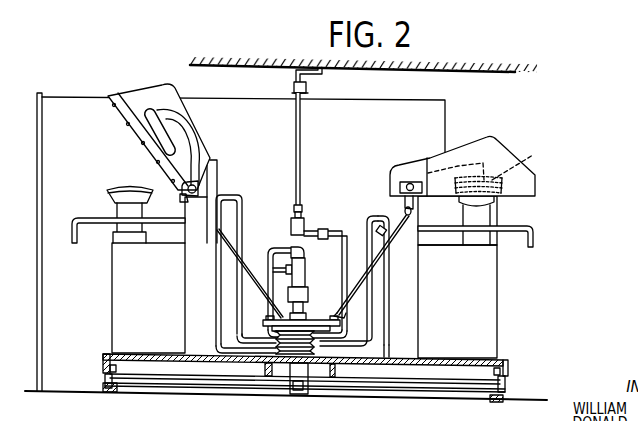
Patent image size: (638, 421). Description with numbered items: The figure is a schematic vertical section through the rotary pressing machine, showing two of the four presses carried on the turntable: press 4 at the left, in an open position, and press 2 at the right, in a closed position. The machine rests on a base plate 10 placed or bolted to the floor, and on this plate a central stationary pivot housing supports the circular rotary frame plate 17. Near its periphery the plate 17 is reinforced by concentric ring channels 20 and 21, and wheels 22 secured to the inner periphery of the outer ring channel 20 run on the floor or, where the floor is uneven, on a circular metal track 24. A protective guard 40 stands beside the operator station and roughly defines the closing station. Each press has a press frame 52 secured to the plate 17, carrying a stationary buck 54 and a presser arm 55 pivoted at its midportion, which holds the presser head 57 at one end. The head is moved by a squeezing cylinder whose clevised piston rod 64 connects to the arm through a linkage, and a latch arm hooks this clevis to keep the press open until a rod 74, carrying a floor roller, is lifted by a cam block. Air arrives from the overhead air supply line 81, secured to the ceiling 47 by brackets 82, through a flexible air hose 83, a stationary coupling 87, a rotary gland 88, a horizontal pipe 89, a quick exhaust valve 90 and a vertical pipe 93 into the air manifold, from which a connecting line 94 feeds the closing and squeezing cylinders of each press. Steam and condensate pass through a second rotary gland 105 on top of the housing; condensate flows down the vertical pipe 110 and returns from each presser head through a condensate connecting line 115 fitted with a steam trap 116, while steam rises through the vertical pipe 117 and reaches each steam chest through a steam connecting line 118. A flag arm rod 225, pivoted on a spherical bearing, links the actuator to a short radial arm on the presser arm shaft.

The press 2 is at (501, 293).
The press 4 is at (140, 306).
The base plate 10 is at (288, 394).
The rotary frame plate 17 is at (453, 358).
The outer ring channel 20 is at (505, 362).
The inner ring channel 21 is at (263, 367).
The wheels 22 is at (118, 368).
The circular metal track 24 is at (105, 384).
The protective guard 40 is at (48, 183).
The ceiling 47 is at (525, 74).
The press frame 52 is at (485, 328).
The stationary buck 54 is at (128, 187).
The presser arm 55 is at (422, 167).
The presser head 57 is at (520, 160).
The squeeze cylinder piston rod 64 is at (485, 203).
The rod 74 is at (533, 233).
The overhead air supply line 81 is at (462, 75).
The brackets 82 is at (323, 75).
The flexible air hose 83 is at (303, 203).
The stationary coupling 87 is at (303, 218).
The rotary gland 88 is at (291, 230).
The rigid horizontally extending pipe 89 is at (310, 236).
The quick exhaust valve 90 is at (327, 232).
The generally rigid vertical pipe 93 is at (340, 308).
The connecting line 94 is at (382, 351).
The rotary gland 105 is at (312, 276).
The vertically extending pipe 110 is at (278, 282).
The condensate connecting line 115 is at (380, 296).
The steam trap 116 is at (383, 231).
The vertical pipe 117 is at (272, 307).
The steam connecting line 118 is at (372, 281).
The flag arm rod 225 is at (216, 252).